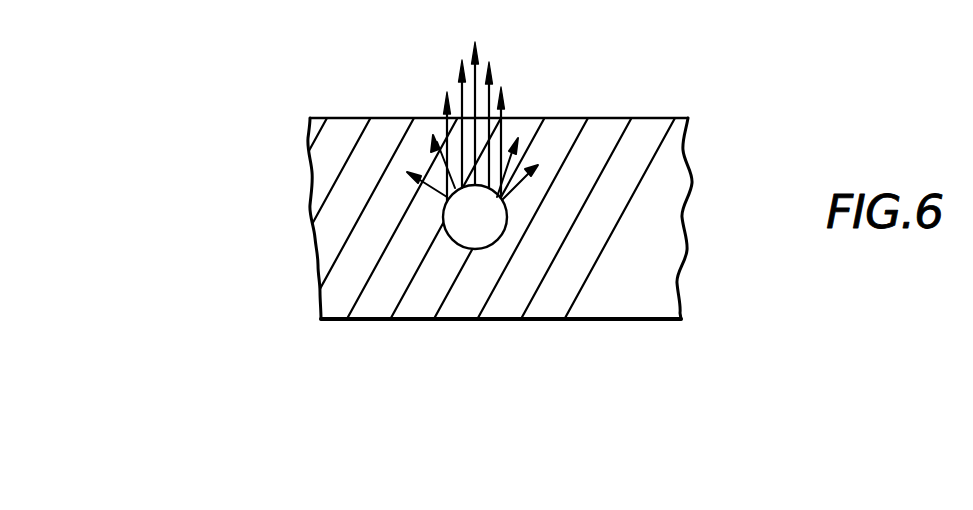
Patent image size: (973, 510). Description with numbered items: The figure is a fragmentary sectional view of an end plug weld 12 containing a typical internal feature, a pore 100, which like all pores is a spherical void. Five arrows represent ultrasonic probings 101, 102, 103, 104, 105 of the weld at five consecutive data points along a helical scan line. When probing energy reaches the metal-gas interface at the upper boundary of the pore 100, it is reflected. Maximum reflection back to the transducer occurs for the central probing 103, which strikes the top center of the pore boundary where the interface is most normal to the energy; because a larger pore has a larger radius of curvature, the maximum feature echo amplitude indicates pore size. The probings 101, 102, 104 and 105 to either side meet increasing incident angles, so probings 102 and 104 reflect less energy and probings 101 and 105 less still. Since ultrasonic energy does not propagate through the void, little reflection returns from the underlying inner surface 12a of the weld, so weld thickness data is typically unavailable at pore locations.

The end plug weld 12 is at (630, 117).
The inner surface of the weld 12a is at (558, 319).
The pore 100 is at (458, 223).
The ultrasonic probing 101 is at (447, 113).
The ultrasonic probing 102 is at (460, 85).
The ultrasonic probing 103 is at (478, 71).
The ultrasonic probing 104 is at (490, 89).
The ultrasonic probing 105 is at (501, 116).